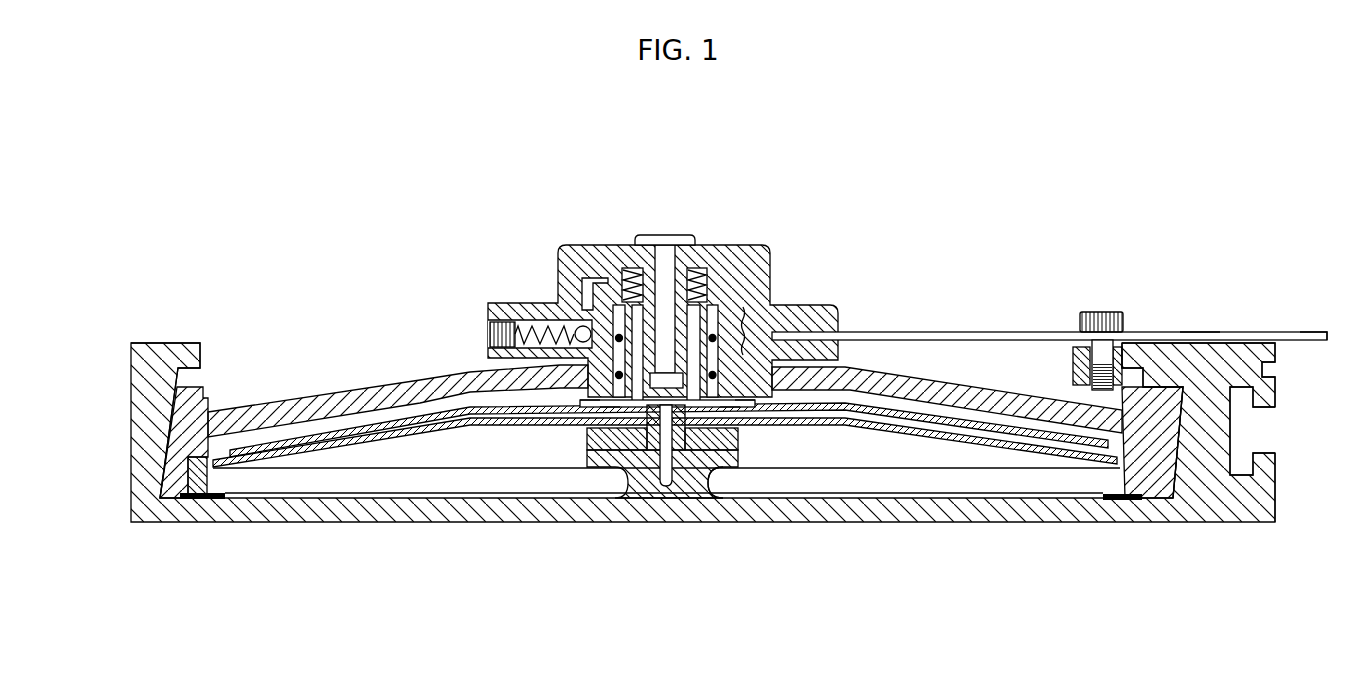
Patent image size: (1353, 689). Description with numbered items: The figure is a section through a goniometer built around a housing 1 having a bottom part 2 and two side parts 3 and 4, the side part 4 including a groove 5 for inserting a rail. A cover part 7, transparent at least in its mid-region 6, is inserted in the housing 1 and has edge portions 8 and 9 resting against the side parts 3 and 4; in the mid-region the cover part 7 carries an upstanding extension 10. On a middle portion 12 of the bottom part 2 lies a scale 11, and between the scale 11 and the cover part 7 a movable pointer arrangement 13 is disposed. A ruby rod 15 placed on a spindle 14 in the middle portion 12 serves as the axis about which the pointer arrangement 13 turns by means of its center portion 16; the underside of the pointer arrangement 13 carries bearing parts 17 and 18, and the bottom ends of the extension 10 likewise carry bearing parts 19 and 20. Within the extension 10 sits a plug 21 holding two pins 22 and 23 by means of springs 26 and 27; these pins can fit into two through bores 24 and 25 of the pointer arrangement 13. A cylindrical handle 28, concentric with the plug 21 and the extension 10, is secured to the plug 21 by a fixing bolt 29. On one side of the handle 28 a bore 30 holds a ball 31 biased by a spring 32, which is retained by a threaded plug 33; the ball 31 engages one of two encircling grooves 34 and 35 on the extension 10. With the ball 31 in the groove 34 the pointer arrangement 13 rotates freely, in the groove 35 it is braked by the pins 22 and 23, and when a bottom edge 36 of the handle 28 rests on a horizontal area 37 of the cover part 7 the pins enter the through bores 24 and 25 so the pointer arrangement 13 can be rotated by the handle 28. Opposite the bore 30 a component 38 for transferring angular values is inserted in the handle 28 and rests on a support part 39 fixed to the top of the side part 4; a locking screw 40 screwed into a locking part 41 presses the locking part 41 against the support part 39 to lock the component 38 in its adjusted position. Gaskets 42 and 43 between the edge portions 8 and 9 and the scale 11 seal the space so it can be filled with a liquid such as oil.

The housing 1 is at (130, 505).
The bottom part 2 is at (283, 510).
The side part 3 is at (157, 355).
The side part 4 is at (1232, 505).
The groove 5 is at (1243, 418).
The mid-region 6 is at (313, 398).
The cover part 7 is at (940, 390).
The edge portion 8 is at (198, 398).
The edge portion 9 is at (1150, 478).
The extension 10 is at (768, 300).
The scale 11 is at (925, 440).
The middle portion 12 is at (618, 507).
The pointer arrangement 13 is at (393, 422).
The spindle 14 is at (688, 480).
The ruby rod 15 is at (660, 487).
The center portion 16 is at (725, 452).
The bearing part 17 is at (585, 420).
The bearing part 18 is at (745, 412).
The bearing part 19 is at (568, 412).
The bearing part 20 is at (762, 402).
The plug 21 is at (683, 252).
The pin 22 is at (597, 262).
The pin 23 is at (745, 300).
The through bore 24 is at (598, 440).
The through bore 25 is at (745, 445).
The spring 26 is at (624, 272).
The spring 27 is at (710, 270).
The handle 28 is at (732, 270).
The fixing bolt 29 is at (667, 237).
The bore 30 is at (520, 305).
The ball 31 is at (487, 348).
The spring 32 is at (535, 325).
The threaded plug 33 is at (492, 322).
The encircling groove 34 is at (587, 293).
The encircling groove 35 is at (578, 328).
The bottom edge 36 is at (812, 350).
The horizontal area 37 is at (868, 333).
The component for transferring angular values 38 is at (1320, 333).
The support part 39 is at (1202, 333).
The locking screw 40 is at (1103, 312).
The locking part 41 is at (1073, 357).
The gasket 42 is at (208, 500).
The gasket 43 is at (1108, 500).